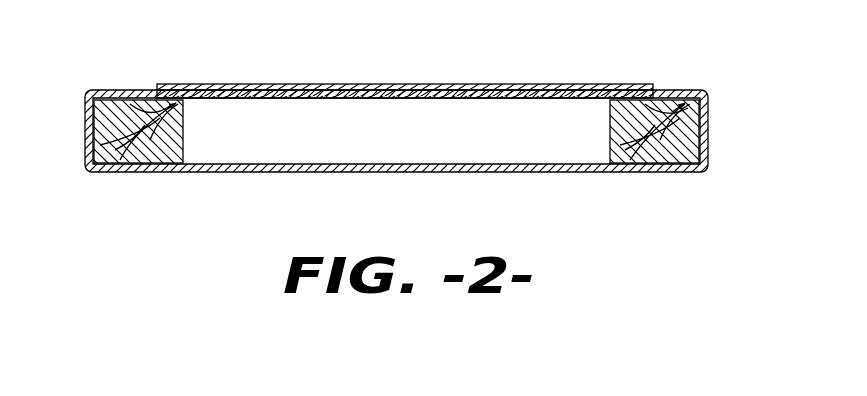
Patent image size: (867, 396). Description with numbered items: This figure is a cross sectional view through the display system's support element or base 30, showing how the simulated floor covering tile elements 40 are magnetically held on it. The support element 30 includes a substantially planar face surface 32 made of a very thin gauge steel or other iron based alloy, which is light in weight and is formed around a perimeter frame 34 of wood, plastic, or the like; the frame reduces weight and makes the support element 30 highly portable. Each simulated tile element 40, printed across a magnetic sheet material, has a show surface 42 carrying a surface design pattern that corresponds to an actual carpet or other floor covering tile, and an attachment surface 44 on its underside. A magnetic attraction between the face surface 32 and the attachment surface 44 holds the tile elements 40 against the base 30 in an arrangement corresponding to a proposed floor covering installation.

The support element 30 is at (407, 117).
The face surface 32 is at (133, 88).
The perimeter frame 34 is at (142, 158).
The simulated floor covering tile element 40 is at (196, 81).
The show surface 42 is at (228, 86).
The attachment surface 44 is at (212, 95).